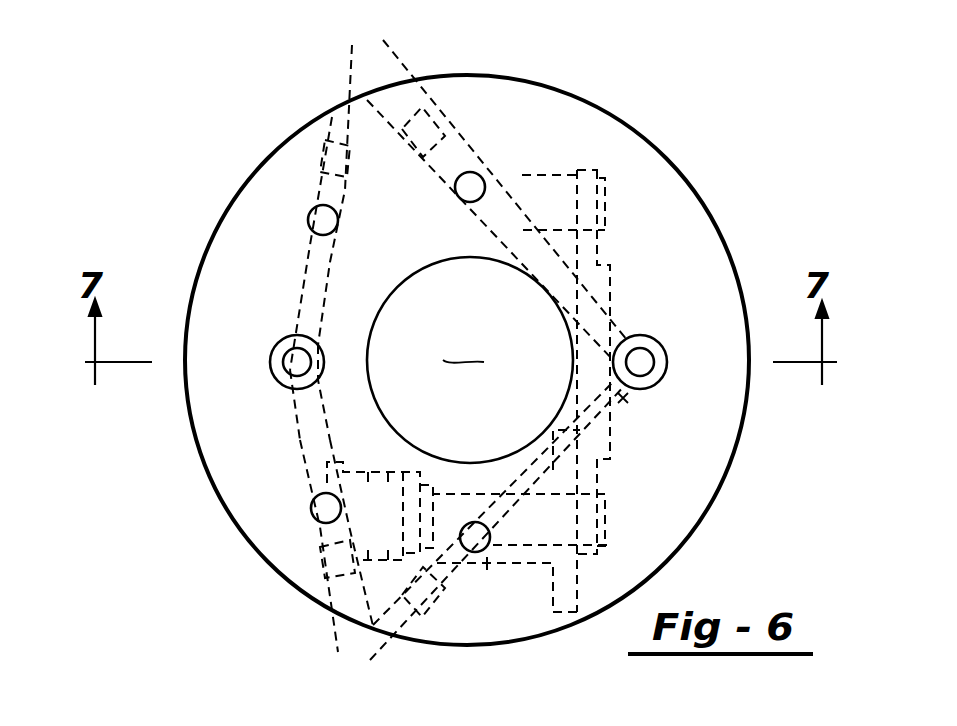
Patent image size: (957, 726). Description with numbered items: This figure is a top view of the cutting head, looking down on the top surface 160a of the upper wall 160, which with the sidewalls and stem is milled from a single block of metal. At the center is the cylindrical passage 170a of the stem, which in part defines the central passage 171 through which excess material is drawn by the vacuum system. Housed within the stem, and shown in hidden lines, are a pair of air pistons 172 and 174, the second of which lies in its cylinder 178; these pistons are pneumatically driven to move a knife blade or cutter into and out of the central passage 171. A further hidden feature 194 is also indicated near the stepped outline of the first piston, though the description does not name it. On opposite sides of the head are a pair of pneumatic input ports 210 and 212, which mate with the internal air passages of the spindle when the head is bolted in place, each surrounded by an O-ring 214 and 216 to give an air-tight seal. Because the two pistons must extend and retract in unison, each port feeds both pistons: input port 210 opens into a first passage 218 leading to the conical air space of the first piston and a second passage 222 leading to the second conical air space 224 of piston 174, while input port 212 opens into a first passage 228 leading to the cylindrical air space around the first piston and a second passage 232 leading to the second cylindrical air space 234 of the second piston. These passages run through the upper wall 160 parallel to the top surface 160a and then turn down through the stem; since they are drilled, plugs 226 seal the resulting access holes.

The upper wall 160 is at (688, 540).
The top surface 160a is at (693, 507).
The cylindrical passage 170a is at (437, 263).
The central passage 171 is at (469, 346).
The air piston 172 is at (551, 177).
The air piston 174 is at (612, 517).
The cylinder 178 is at (440, 466).
The hidden stepped recess 194 is at (610, 267).
The pneumatic input port 210 is at (293, 364).
The pneumatic input port 212 is at (645, 358).
The O-ring 214 is at (272, 352).
The O-ring 216 is at (662, 362).
The first passage 218 is at (297, 268).
The second passage 222 is at (295, 423).
The second conical air space 224 is at (300, 516).
The plugs 226 is at (311, 210).
The first passage 228 is at (623, 330).
The second passage 232 is at (628, 399).
The second cylindrical air space 234 is at (473, 466).